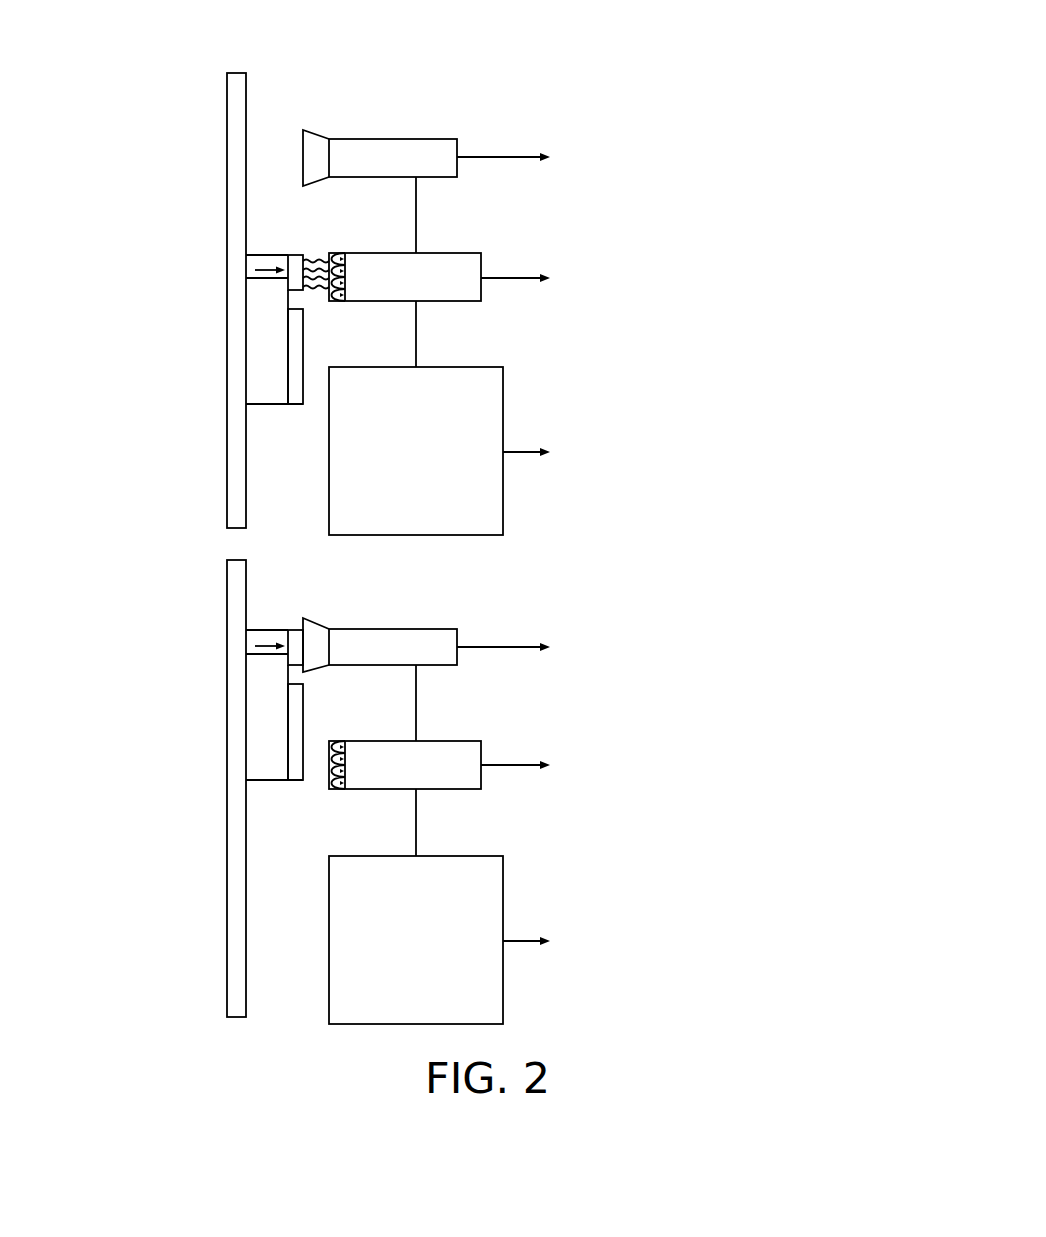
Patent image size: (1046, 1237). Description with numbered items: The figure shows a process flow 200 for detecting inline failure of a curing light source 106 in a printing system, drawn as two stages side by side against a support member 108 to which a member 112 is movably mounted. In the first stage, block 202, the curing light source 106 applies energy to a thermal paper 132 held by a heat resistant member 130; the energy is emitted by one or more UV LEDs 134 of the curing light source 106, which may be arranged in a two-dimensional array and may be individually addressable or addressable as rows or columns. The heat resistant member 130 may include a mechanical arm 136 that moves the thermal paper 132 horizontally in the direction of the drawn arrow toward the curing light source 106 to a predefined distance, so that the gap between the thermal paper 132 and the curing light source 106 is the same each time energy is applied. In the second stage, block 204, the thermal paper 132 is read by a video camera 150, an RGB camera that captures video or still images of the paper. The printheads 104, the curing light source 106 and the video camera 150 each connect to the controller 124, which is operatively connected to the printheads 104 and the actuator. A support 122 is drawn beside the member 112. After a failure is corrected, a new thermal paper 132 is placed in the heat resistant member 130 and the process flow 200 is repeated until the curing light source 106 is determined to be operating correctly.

The process flow 200 is at (499, 70).
The block 202 is at (563, 123).
The block 204 is at (562, 612).
The printheads 104 is at (503, 497).
The curing light source 106 is at (481, 258).
The support member 108 is at (246, 93).
The member 112 is at (267, 405).
The support 122 is at (303, 335).
The controller 124 is at (590, 562).
The heat resistant member 130 is at (267, 254).
The thermal paper 132 is at (297, 253).
The UV LEDs 134 is at (340, 258).
The mechanical arm 136 is at (246, 271).
The video camera 150 is at (393, 139).